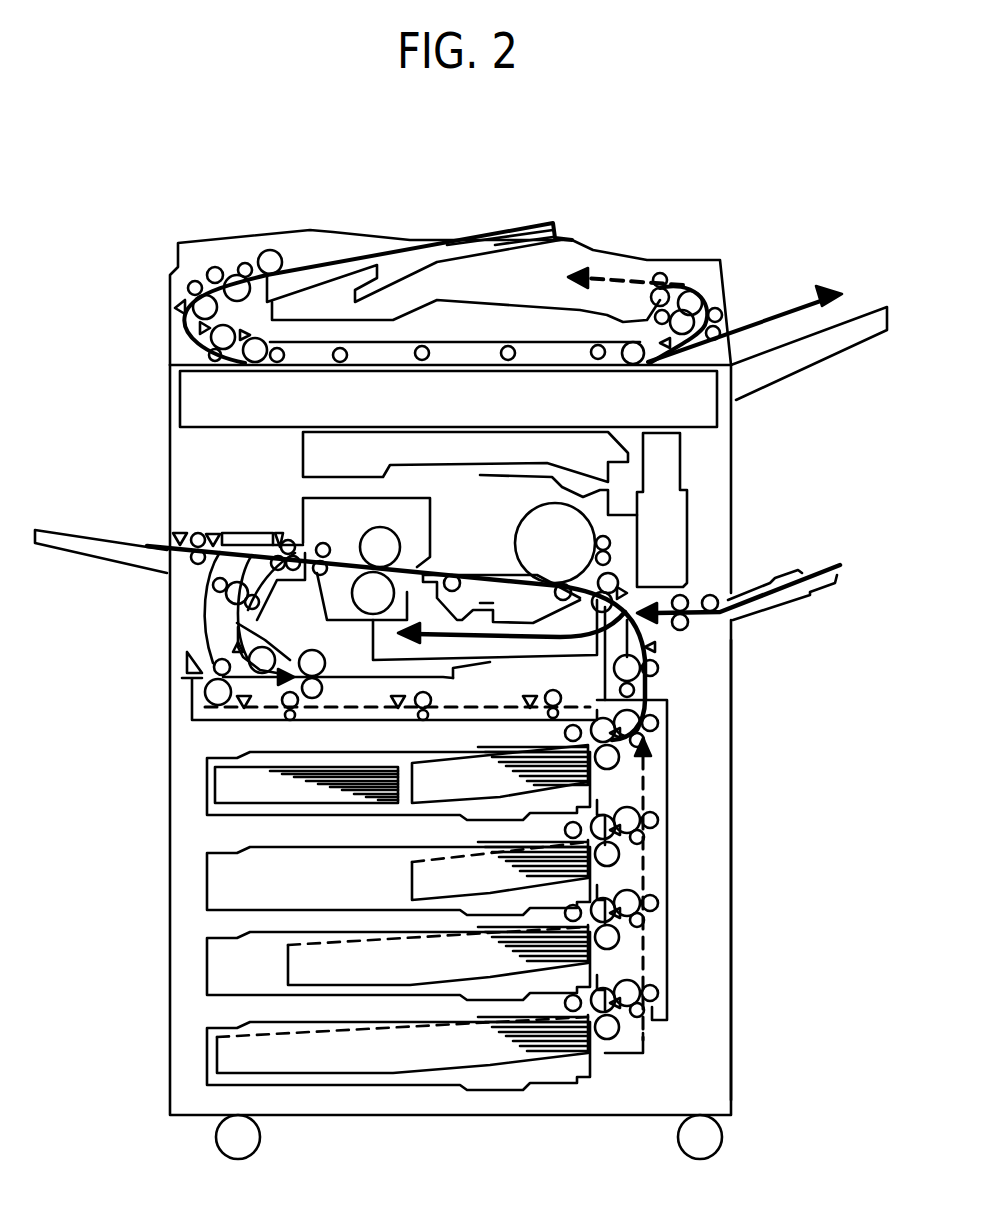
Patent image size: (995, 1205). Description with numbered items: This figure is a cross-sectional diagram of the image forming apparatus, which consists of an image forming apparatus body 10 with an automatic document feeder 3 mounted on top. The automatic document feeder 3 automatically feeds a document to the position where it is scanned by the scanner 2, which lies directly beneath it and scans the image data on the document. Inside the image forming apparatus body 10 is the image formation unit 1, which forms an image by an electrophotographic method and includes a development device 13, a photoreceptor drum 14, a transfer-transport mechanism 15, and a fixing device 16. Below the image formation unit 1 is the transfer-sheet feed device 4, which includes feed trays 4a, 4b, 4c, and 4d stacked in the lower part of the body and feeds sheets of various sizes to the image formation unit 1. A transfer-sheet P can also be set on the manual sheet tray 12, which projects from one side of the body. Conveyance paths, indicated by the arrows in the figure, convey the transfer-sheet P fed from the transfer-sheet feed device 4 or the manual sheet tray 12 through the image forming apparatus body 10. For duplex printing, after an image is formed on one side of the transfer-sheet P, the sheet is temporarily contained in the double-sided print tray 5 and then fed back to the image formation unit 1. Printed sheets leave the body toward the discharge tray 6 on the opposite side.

The image formation unit 1 is at (706, 469).
The scanner 2 is at (187, 394).
The automatic document feeder 3 is at (595, 250).
The transfer-sheet feed device 4 is at (681, 813).
The feed tray 4a is at (207, 787).
The feed tray 4b is at (207, 881).
The feed tray 4c is at (207, 965).
The feed tray 4d is at (353, 1090).
The double-sided print tray 5 is at (190, 705).
The discharge tray 6 is at (67, 535).
The image forming apparatus body 10 is at (720, 514).
The manual sheet tray 12 is at (788, 590).
The development device 13 is at (662, 443).
The photoreceptor drum 14 is at (569, 560).
The transfer-transport mechanism 15 is at (458, 569).
The fixing device 16 is at (305, 512).
The transfer-sheet P is at (553, 1043).